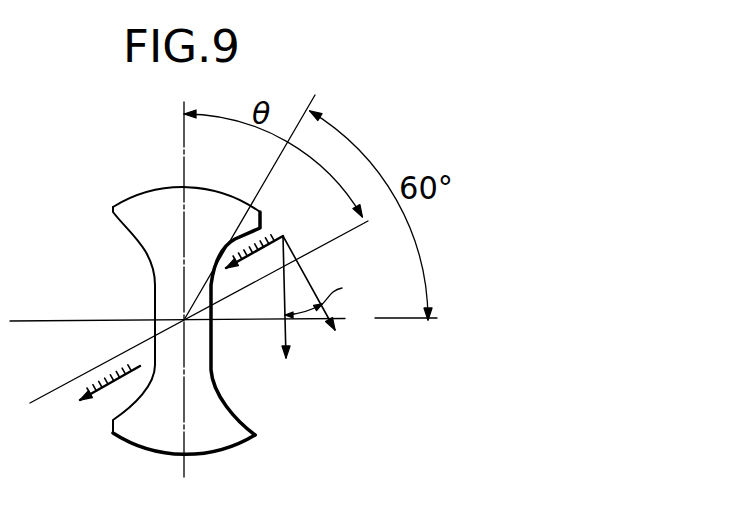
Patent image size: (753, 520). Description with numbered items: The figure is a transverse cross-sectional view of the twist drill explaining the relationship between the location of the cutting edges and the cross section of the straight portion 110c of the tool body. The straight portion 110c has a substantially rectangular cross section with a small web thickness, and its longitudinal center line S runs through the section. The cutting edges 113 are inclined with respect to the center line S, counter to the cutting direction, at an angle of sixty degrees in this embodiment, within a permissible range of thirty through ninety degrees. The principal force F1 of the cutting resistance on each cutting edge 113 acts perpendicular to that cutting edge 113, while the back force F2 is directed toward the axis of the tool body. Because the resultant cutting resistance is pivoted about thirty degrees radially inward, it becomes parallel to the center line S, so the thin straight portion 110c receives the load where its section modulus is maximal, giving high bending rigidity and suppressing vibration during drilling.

The cam member 110c is at (155, 283).
The cutting edge 113 is at (256, 270).
The longitudinal center line S is at (184, 153).
The principal force F1 is at (339, 297).
The back force F2 is at (277, 223).